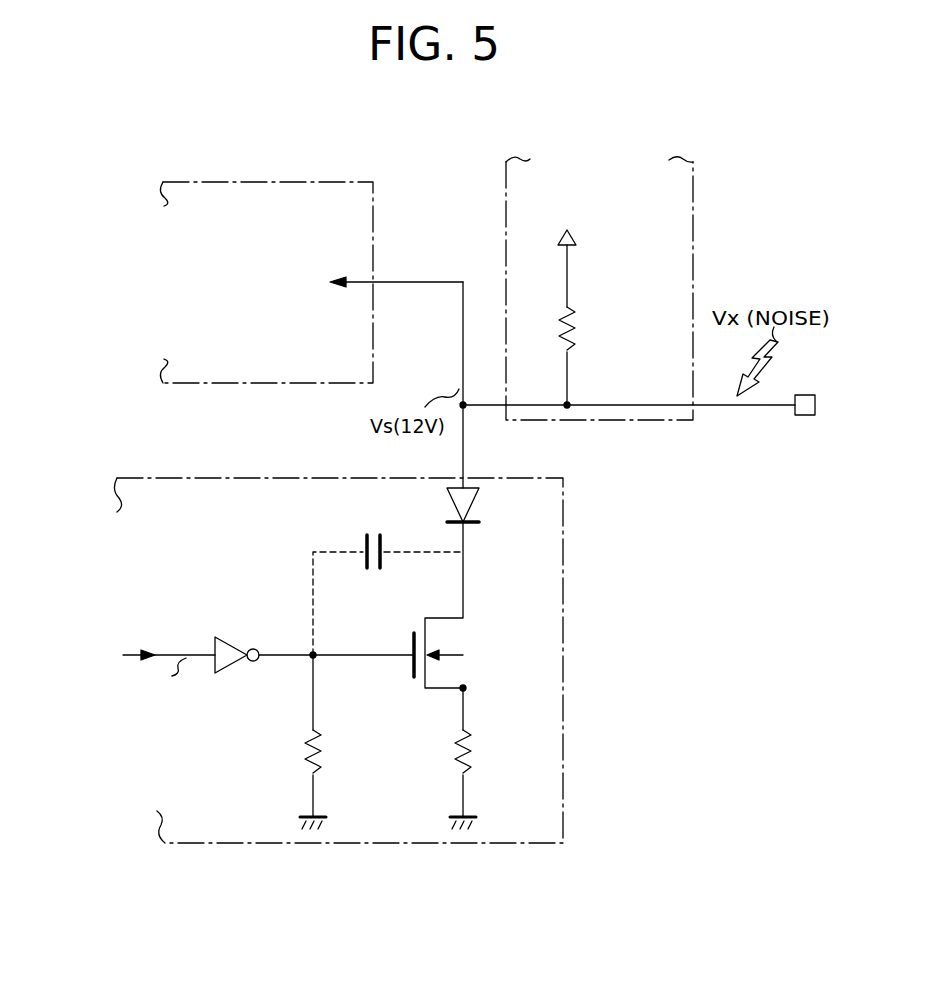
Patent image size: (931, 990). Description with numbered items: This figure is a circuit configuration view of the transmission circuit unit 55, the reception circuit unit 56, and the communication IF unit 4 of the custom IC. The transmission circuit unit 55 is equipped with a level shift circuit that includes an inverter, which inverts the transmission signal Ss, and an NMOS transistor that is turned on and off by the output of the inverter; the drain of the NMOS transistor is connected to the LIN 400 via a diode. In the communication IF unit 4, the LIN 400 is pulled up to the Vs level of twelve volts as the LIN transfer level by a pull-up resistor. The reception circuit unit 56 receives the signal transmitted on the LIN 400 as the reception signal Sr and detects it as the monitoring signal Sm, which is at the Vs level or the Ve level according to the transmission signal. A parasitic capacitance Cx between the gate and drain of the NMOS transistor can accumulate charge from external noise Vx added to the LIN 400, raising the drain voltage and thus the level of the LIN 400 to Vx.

The reception circuit unit 56 is at (273, 182).
The communication IF unit 4 is at (693, 244).
The transmission circuit unit 55 is at (563, 705).
The LIN 400 is at (770, 406).